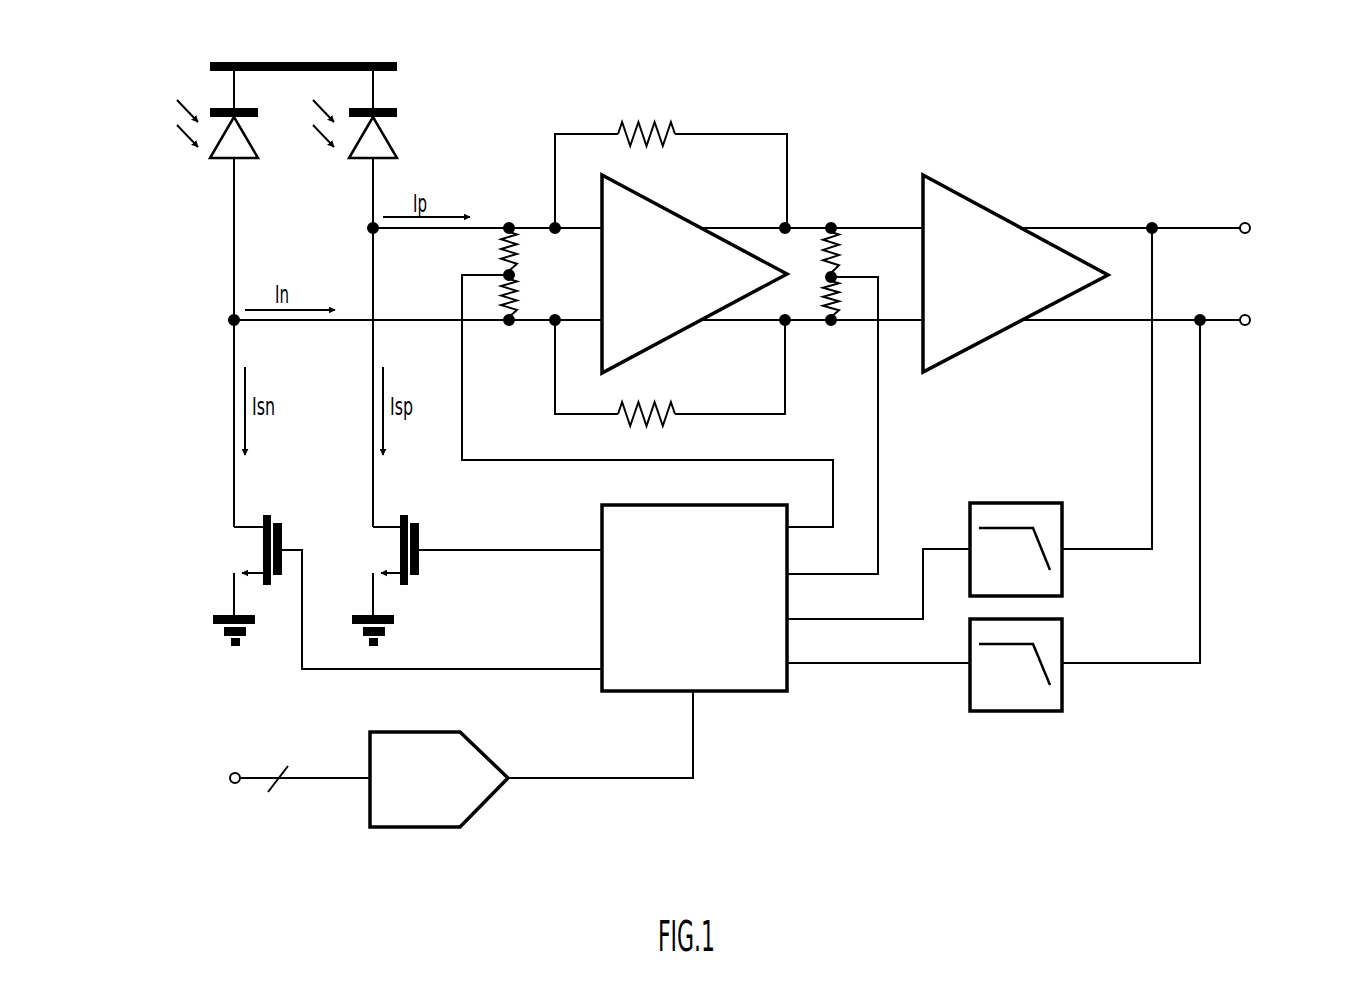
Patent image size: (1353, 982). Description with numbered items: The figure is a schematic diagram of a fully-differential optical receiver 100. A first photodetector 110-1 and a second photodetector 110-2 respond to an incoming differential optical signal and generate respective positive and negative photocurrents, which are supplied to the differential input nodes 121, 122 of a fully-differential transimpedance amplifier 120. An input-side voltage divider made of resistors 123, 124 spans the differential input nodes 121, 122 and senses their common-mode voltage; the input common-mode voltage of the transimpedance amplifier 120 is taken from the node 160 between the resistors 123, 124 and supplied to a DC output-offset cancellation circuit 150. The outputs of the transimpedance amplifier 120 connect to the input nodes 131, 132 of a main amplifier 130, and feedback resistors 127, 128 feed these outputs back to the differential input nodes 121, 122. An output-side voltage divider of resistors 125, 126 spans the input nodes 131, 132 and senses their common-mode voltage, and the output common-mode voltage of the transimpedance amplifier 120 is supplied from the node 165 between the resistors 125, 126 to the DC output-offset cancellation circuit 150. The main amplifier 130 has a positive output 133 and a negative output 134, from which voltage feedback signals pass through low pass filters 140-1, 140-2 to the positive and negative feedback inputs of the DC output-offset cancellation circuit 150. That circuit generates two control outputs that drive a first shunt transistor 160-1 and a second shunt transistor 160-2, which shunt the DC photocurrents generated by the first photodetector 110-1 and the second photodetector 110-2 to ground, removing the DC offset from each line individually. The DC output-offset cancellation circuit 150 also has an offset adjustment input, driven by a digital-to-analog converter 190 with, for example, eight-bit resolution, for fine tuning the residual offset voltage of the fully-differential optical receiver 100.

The fully-differential optical receiver 100 is at (1020, 102).
The photodetector PDp 110-1 is at (410, 130).
The photodetector PDn 110-2 is at (158, 113).
The transimpedance amplifier 120 is at (677, 213).
The differential input node 121 is at (509, 226).
The differential input node 122 is at (509, 323).
The resistor 123 is at (520, 245).
The resistor 124 is at (520, 292).
The resistor 125 is at (820, 250).
The resistor 126 is at (820, 300).
The feedback resistor Rf 127 is at (643, 138).
The feedback resistor Rf 128 is at (657, 418).
The main amplifier 130 is at (1000, 213).
The input node 131 is at (833, 227).
The input node 132 is at (831, 324).
The output OP 133 is at (1280, 205).
The output ON 134 is at (1278, 340).
The low pass filter 140-1 is at (1003, 503).
The low pass filter 140-2 is at (993, 711).
The DC output-offset cancellation circuit 150 is at (733, 691).
The node 160 is at (507, 273).
The shunt transistor MSp 160-1 is at (428, 535).
The shunt transistor MSn 160-2 is at (198, 537).
The node 165 is at (834, 276).
The digital-to-analog converter 190 is at (433, 732).